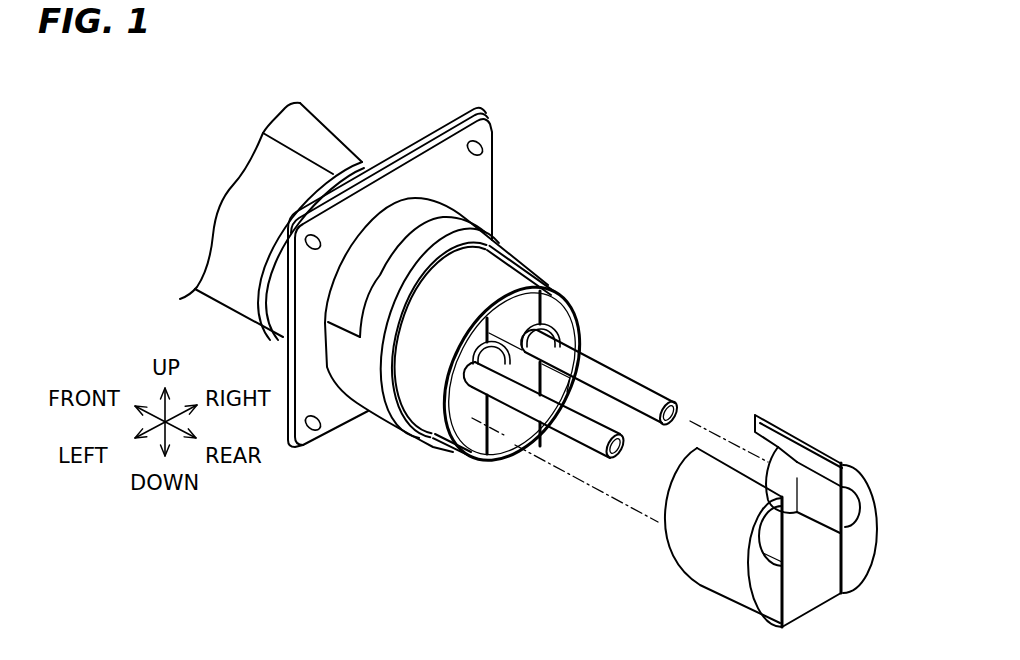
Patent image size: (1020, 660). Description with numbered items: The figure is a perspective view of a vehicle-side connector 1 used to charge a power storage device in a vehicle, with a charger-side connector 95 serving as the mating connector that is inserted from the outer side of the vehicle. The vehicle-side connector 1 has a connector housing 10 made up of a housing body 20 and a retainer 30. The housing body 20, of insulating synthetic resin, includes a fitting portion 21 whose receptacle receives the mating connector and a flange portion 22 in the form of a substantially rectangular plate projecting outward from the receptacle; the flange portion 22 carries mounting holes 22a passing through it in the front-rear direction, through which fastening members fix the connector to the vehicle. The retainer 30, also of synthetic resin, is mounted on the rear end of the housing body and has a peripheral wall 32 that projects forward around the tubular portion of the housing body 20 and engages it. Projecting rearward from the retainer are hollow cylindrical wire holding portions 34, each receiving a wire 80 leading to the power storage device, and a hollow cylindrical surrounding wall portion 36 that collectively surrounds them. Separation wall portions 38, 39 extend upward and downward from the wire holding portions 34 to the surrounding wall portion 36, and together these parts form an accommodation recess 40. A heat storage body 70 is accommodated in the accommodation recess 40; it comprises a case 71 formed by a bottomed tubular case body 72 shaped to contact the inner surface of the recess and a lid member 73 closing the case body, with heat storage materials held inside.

The vehicle-side connector 1 is at (759, 207).
The connector housing 10 is at (644, 175).
The housing body 20 is at (566, 154).
The fitting portion 21 is at (386, 166).
The flange portion 22 is at (444, 134).
The mounting hole 22a is at (483, 146).
The retainer 30 is at (641, 278).
The peripheral wall 32 is at (408, 440).
The wire holding portion 34 is at (466, 363).
The surrounding wall portion 36 is at (543, 281).
The separation wall portion 38 is at (489, 316).
The separation wall portion 39 is at (540, 440).
The accommodation recess 40 is at (580, 333).
The heat storage body 70 is at (817, 587).
The case 71 is at (880, 410).
The case body 72 is at (832, 455).
The lid member 73 is at (858, 477).
The wire 80 is at (659, 393).
The charger-side connector 95 is at (347, 141).